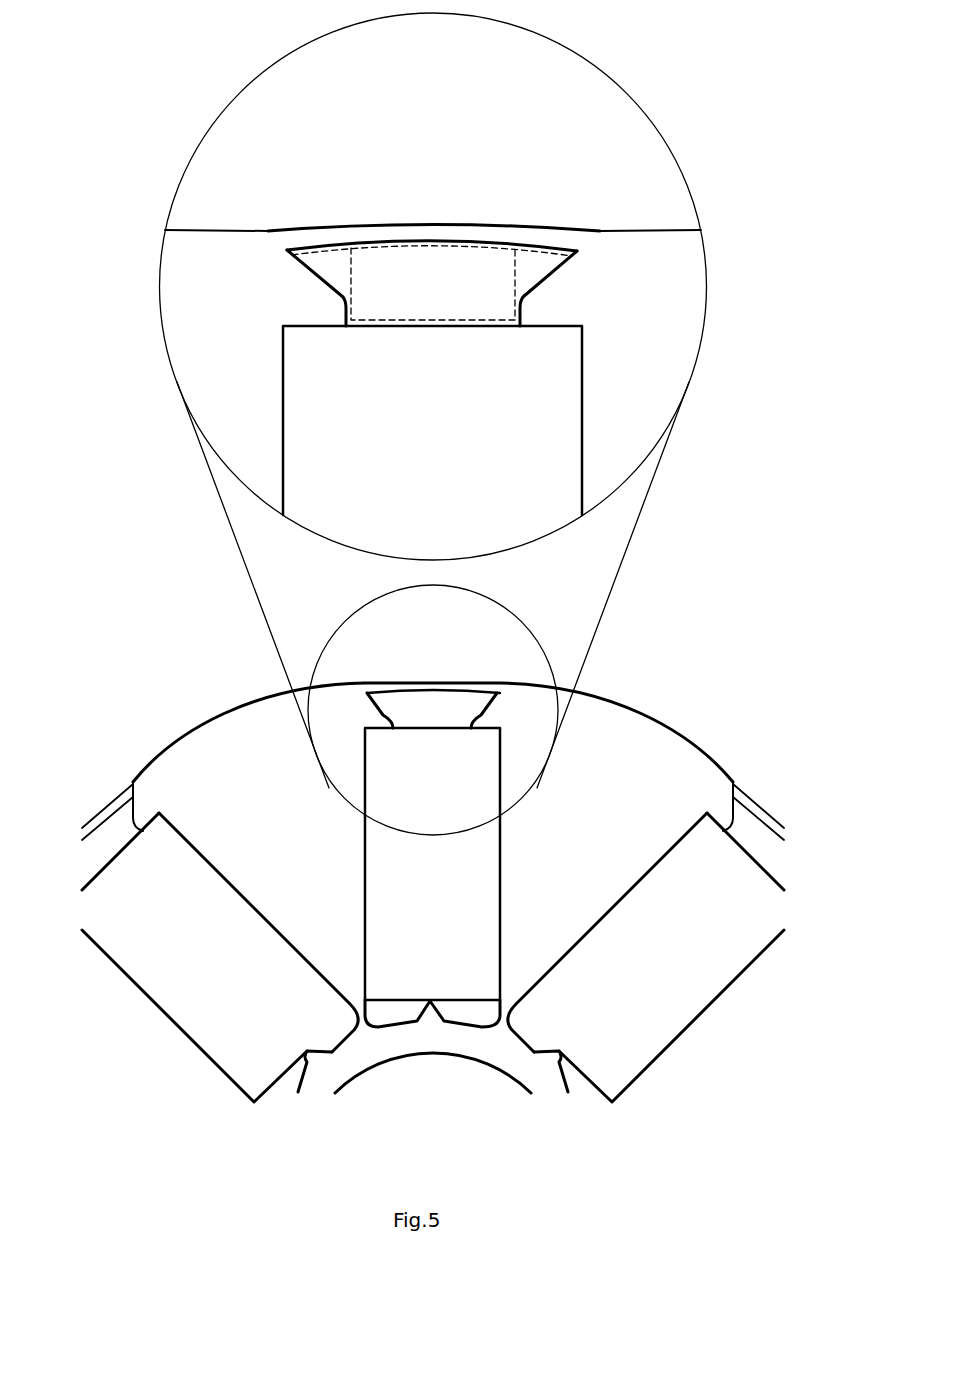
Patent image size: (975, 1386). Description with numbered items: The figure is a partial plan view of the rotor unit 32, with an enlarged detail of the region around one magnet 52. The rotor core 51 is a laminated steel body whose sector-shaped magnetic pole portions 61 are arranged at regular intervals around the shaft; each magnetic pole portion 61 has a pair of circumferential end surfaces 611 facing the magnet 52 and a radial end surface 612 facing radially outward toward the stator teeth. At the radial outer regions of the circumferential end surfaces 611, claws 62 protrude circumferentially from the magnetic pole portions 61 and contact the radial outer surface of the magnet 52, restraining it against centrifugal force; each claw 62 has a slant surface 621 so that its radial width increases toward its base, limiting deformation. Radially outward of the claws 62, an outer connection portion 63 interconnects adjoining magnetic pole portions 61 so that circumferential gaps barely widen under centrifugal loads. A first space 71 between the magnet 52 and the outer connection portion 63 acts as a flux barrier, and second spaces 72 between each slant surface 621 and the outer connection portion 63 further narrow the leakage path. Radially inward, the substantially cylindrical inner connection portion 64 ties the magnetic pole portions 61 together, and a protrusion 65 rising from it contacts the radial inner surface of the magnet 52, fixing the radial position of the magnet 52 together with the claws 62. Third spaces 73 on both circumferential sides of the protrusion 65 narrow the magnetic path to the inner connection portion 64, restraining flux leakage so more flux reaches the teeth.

The rotor unit 32 is at (188, 610).
The rotor core 51 is at (128, 735).
The magnet 52 is at (525, 433).
The magnetic pole portion 61 is at (200, 348).
The circumferential end surface 611 is at (645, 878).
The radial end surface 612 is at (645, 712).
The claw 62 is at (307, 307).
The slant surface 621 is at (537, 282).
The outer connection portion 63 is at (493, 232).
The inner connection portion 64 is at (500, 1053).
The protrusion 65 is at (432, 1012).
The first space 71 is at (437, 264).
The second space 72 is at (338, 259).
The third space 73 is at (337, 1045).